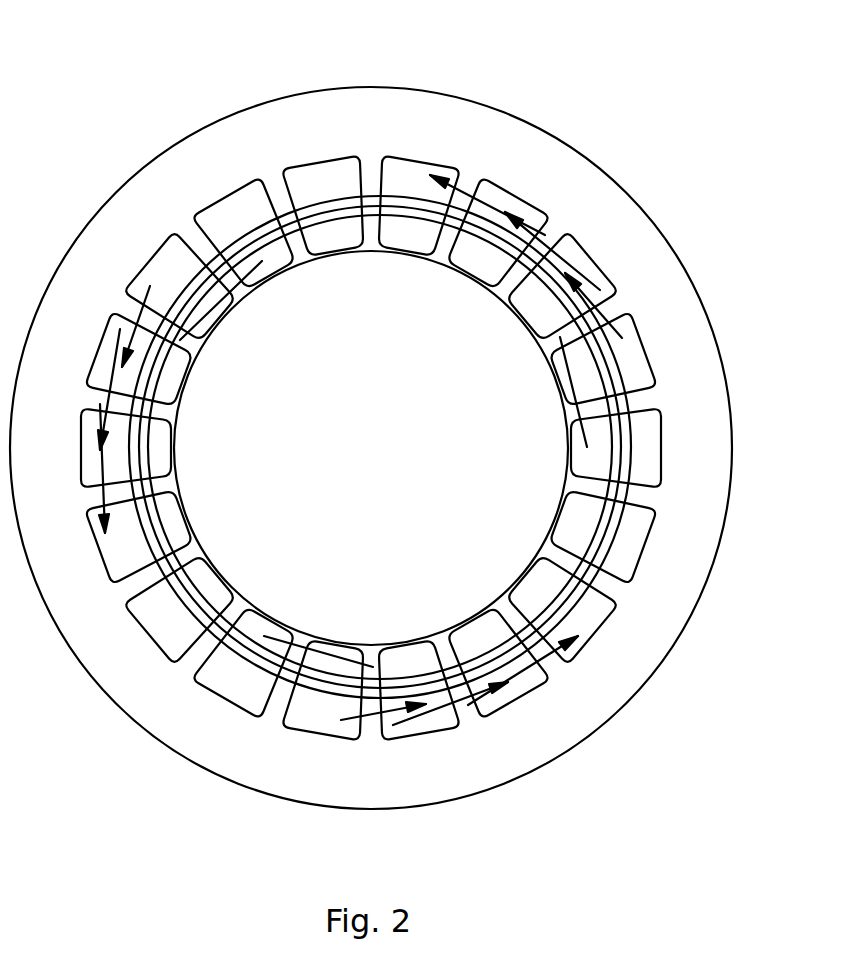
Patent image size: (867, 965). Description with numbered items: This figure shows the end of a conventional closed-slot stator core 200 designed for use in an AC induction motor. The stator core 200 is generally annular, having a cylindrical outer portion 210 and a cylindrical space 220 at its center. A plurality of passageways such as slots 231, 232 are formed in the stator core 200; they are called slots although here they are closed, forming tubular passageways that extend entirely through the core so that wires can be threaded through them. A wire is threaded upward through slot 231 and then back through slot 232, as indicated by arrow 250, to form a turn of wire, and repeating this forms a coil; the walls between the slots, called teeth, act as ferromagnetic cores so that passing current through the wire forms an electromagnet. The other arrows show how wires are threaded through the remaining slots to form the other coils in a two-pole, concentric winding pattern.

The stator core 200 is at (598, 88).
The cylindrical outer portion 210 is at (613, 178).
The cylindrical space 220 is at (485, 367).
The slot 231 is at (145, 633).
The slot 232 is at (428, 159).
The arrow 250 is at (470, 181).